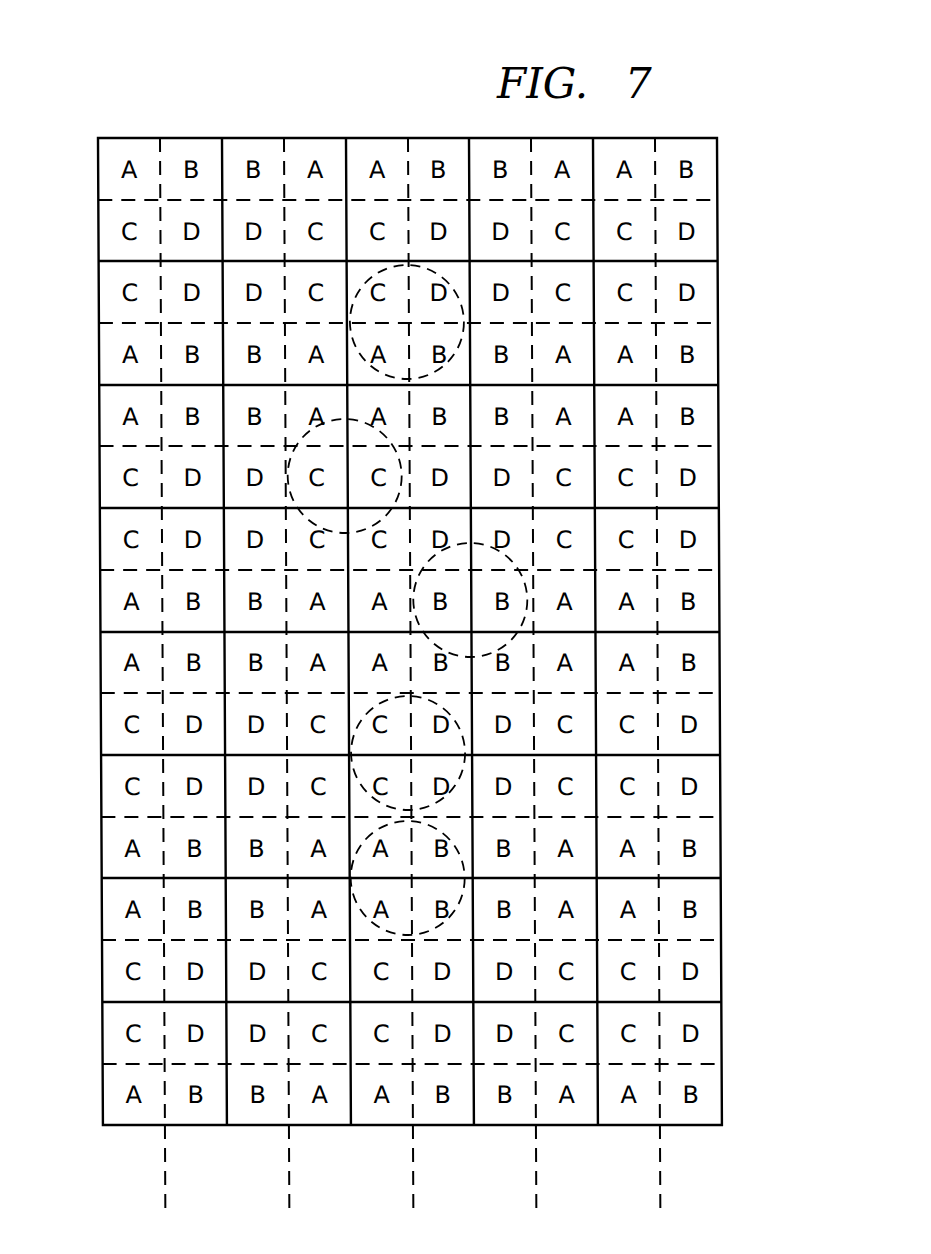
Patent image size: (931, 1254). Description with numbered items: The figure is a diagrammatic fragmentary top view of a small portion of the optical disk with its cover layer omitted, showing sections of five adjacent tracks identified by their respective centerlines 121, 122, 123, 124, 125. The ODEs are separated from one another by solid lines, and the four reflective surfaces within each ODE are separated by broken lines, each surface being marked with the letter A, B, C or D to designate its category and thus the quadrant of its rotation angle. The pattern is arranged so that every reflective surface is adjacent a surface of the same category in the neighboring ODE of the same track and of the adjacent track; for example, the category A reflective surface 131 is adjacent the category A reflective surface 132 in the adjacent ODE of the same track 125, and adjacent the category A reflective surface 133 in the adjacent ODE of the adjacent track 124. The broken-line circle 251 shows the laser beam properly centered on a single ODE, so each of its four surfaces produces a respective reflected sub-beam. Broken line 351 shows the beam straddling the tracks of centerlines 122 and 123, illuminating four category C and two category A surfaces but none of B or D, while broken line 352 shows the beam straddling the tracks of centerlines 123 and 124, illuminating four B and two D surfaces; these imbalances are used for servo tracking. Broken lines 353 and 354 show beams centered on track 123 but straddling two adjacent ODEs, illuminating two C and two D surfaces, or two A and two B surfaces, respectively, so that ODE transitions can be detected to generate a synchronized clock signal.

The laser beam centered on a single ODE 251 is at (360, 290).
The laser beam straddling two tracks 351 is at (290, 462).
The laser beam straddling two tracks 352 is at (526, 580).
The laser beam straddling two adjacent ODEs 353 is at (363, 720).
The laser beam straddling two adjacent ODEs 354 is at (363, 845).
The reflective surface 131 is at (640, 342).
The reflective surface 132 is at (640, 423).
The reflective surface 133 is at (578, 365).
The track centerline 121 is at (160, 1162).
The track centerline 122 is at (284, 1162).
The track centerline 123 is at (408, 1162).
The track centerline 124 is at (531, 1160).
The track centerline 125 is at (655, 1160).